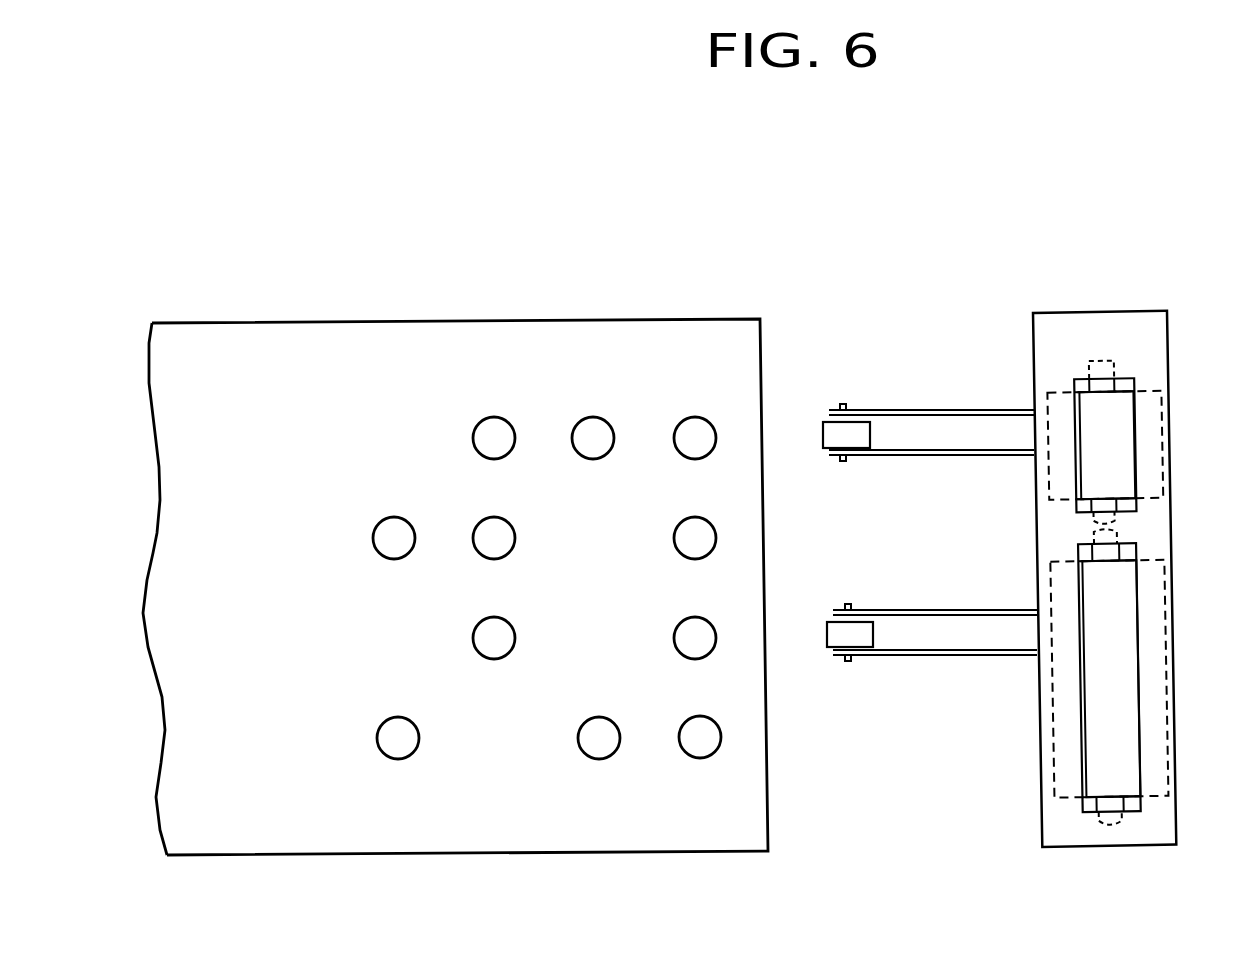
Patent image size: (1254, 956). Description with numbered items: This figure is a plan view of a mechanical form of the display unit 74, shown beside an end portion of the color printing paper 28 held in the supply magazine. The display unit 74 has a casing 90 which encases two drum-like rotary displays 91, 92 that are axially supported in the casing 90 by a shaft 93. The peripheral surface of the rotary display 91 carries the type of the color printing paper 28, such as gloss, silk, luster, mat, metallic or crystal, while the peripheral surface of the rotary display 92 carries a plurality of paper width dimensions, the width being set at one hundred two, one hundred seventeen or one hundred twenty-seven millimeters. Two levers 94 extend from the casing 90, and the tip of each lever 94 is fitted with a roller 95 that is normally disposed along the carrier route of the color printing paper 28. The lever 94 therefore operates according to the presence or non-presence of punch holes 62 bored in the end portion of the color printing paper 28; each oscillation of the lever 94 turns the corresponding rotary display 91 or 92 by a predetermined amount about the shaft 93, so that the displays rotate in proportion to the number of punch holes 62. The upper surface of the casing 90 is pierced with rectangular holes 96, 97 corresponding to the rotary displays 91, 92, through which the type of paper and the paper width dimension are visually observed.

The color printing paper 28 is at (720, 318).
The punch holes 62 is at (677, 440).
The display unit 74 is at (1091, 297).
The casing 90 is at (1157, 323).
The rotary display 91 is at (1137, 553).
The rotary display 92 is at (1126, 500).
The shaft 93 is at (1117, 385).
The lever 94 is at (935, 408).
The roller 95 is at (825, 428).
The rectangular hole 96 is at (1140, 600).
The rectangular hole 97 is at (1130, 429).